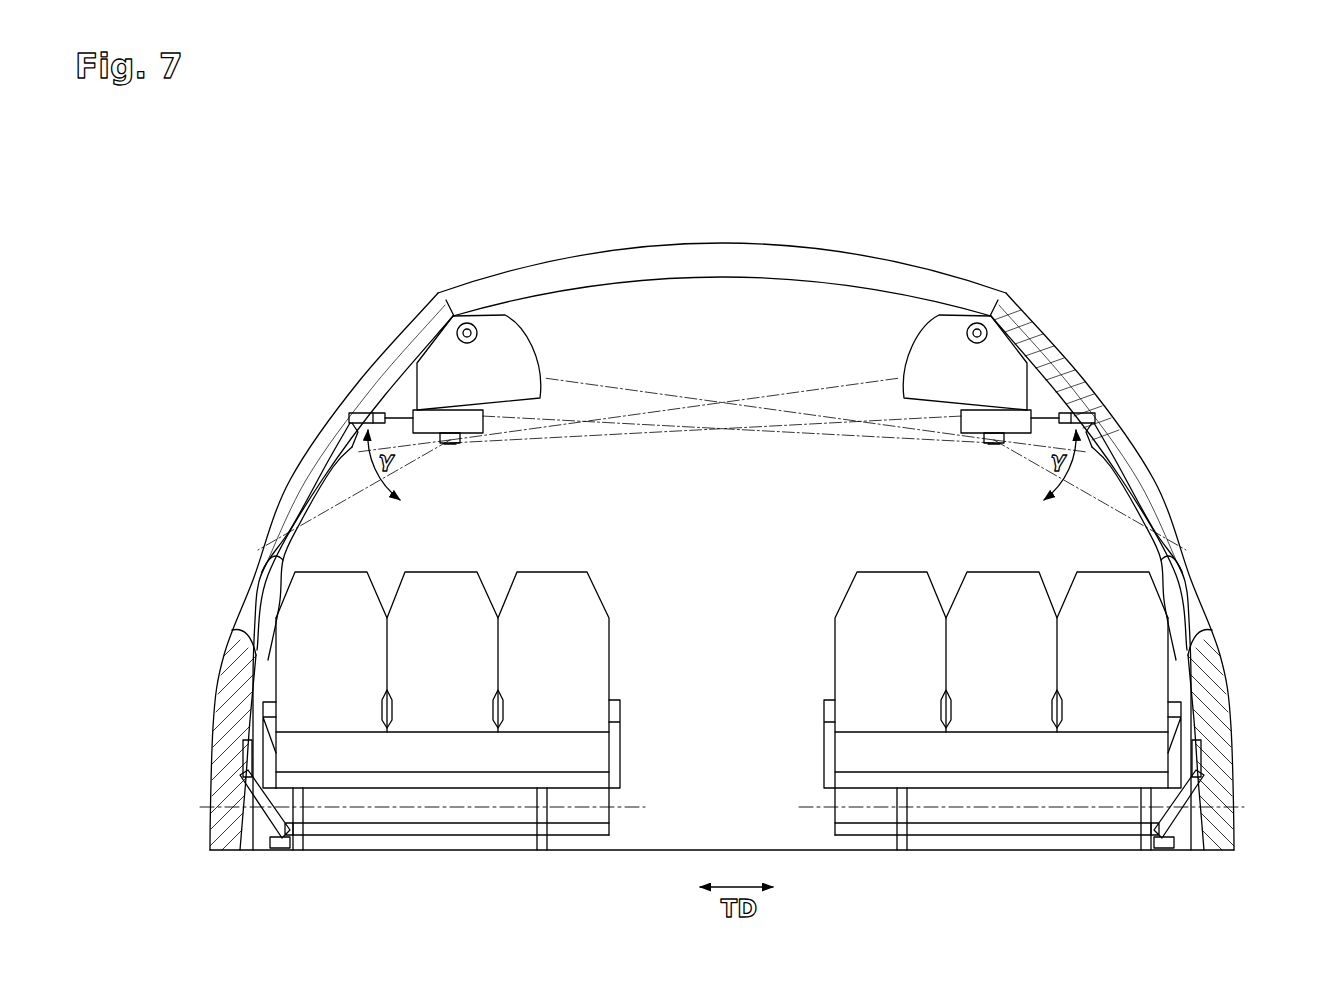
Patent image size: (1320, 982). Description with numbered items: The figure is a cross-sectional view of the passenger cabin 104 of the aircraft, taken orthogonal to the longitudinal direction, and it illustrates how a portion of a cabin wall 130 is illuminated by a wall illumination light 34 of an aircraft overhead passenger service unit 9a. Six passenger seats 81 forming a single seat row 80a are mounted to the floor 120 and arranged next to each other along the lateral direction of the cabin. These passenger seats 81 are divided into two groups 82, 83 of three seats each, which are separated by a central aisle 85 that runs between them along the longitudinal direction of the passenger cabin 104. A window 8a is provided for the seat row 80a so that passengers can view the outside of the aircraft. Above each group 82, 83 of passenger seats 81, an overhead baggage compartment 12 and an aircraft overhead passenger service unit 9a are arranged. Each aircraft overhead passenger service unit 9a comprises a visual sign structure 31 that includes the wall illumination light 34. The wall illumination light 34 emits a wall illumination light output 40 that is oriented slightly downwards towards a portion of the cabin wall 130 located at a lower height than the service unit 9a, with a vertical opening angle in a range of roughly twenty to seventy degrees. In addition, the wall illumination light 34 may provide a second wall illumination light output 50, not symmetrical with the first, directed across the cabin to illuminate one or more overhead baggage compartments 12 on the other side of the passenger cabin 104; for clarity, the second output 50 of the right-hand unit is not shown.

The passenger cabin 104 is at (1024, 217).
The cabin wall 130 is at (370, 388).
The aircraft overhead passenger service unit 9a is at (450, 420).
The overhead baggage compartment 12 is at (505, 347).
The second wall illumination light output 50 is at (664, 392).
The group of passenger seats 82 is at (526, 536).
The seat row 80a is at (587, 523).
The group of passenger seats 83 is at (918, 536).
The passenger seat 81 is at (334, 563).
The central aisle 85 is at (724, 644).
The wall illumination light output 40 is at (376, 499).
The wall illumination light 34 is at (449, 447).
The visual sign structure 31 is at (469, 462).
The window 8a is at (221, 596).
The floor 120 is at (837, 852).